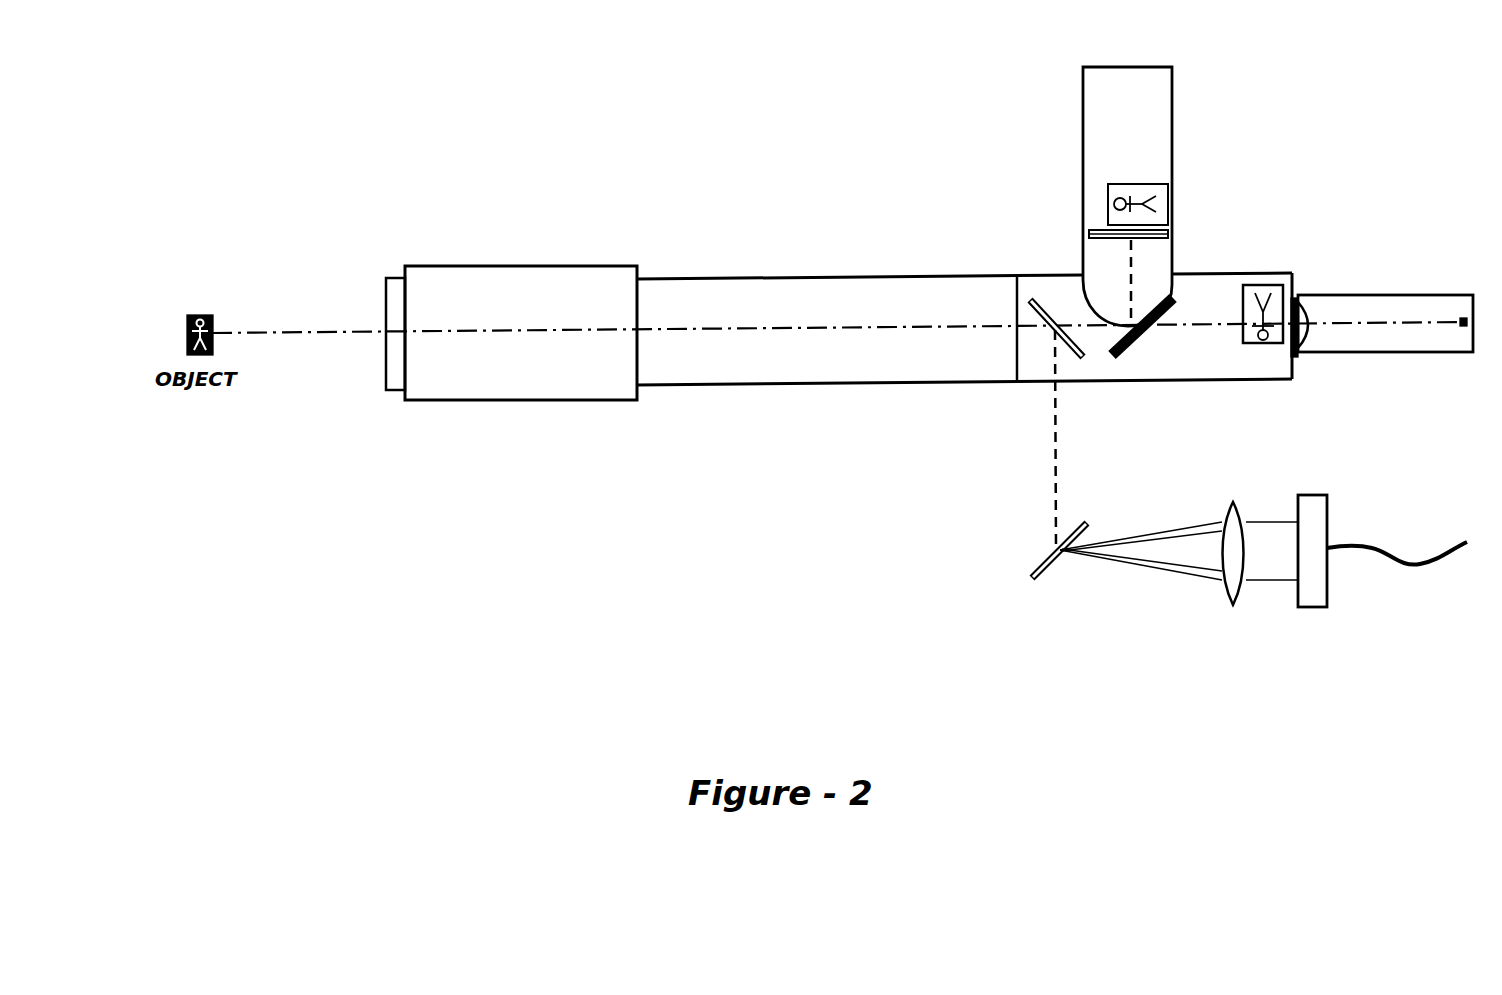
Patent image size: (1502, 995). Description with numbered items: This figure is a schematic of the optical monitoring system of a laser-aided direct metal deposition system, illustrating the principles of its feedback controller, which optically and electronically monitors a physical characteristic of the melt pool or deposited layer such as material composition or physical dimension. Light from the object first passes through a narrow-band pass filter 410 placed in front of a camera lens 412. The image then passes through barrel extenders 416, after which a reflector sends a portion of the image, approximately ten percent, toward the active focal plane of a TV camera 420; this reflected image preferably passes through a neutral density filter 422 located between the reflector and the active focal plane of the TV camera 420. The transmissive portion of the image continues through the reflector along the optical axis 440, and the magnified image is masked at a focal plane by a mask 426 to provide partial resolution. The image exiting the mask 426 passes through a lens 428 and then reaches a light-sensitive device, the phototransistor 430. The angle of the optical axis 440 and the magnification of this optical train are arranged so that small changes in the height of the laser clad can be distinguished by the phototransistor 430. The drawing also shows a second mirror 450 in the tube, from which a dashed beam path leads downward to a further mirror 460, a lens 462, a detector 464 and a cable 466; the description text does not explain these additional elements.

The narrow-band pass filter 410 is at (397, 390).
The camera lens 412 is at (547, 385).
The barrel extenders 416 is at (707, 385).
The TV camera 420 is at (1102, 103).
The neutral density filter 422 is at (1093, 233).
The mask 426 is at (1297, 358).
The lens 428 is at (1333, 275).
The phototransistor 430 is at (1463, 297).
The optical axis 440 is at (823, 332).
The mirror 450 is at (1030, 306).
The mirror 460 is at (1060, 550).
The lens 462 is at (1222, 606).
The detector 464 is at (1315, 598).
The cable 466 is at (1427, 563).